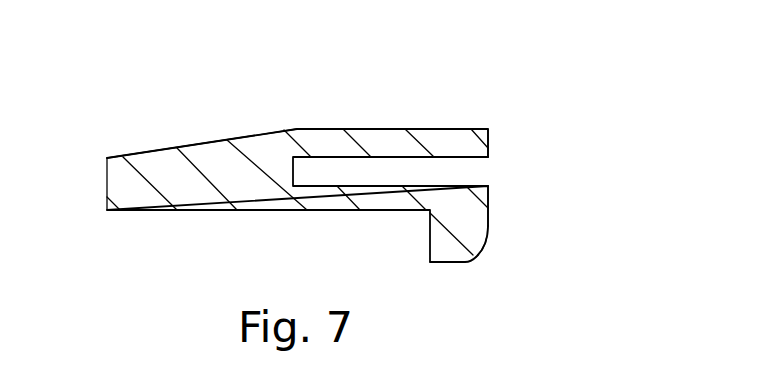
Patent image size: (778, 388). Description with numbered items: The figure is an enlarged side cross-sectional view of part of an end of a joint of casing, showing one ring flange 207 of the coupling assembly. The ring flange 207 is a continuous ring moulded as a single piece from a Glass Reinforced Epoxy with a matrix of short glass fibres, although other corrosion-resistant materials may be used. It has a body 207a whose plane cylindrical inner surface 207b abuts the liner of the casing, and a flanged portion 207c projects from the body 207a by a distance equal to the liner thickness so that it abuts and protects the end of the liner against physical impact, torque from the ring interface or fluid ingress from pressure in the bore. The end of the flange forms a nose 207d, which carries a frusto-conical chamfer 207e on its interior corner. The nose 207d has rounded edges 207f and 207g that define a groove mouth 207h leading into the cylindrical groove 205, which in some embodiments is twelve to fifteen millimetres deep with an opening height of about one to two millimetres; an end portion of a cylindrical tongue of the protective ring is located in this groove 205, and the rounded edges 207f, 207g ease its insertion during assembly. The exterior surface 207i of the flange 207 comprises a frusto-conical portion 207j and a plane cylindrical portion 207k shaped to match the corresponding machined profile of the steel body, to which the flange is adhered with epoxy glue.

The ring flange 207 is at (446, 128).
The cylindrical groove 205 is at (357, 157).
The body 207a is at (311, 139).
The plane cylindrical inner surface 207b is at (308, 212).
The flanged portion 207c is at (430, 237).
The nose 207d is at (491, 220).
The frusto-conical chamfer 207e is at (478, 248).
The rounded edge 207f is at (489, 156).
The rounded edge 207g is at (490, 187).
The groove mouth 207h is at (420, 173).
The exterior surface 207i is at (185, 142).
The frusto-conical portion 207j is at (132, 154).
The plane cylindrical portion 207k is at (337, 129).